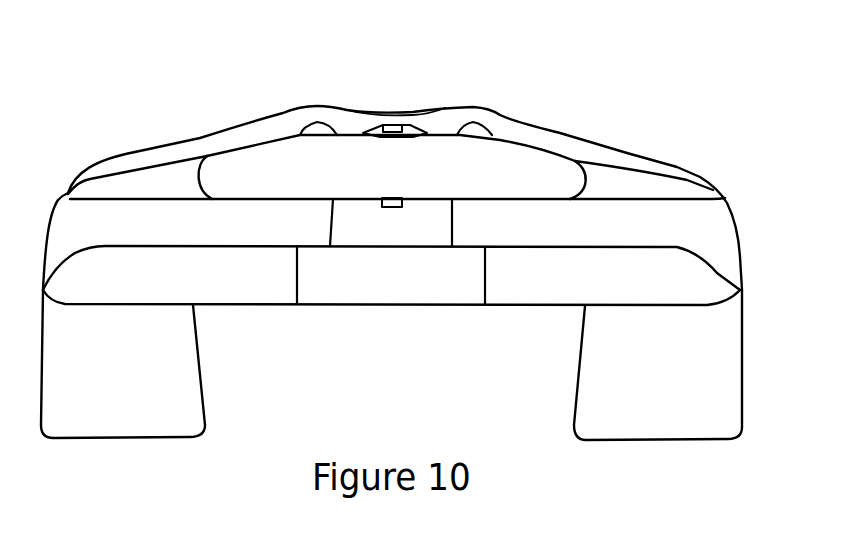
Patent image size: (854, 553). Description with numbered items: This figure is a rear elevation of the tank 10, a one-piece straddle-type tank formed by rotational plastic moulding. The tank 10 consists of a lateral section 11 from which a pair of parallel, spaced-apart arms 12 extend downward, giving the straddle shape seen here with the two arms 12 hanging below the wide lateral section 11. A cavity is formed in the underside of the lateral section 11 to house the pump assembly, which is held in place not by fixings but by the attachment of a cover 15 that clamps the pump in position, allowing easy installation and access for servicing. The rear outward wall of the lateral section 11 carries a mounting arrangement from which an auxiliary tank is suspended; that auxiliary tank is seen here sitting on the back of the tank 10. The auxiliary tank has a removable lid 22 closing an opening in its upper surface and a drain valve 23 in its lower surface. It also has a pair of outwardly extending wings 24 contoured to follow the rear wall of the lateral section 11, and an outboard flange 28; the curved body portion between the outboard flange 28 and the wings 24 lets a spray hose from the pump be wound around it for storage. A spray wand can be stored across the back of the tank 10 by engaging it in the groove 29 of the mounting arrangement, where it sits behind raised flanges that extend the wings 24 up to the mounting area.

The tank 10 is at (723, 182).
The lateral section 11 is at (528, 133).
The arms 12 is at (160, 408).
The cover 15 is at (333, 280).
The removable lid 22 is at (400, 127).
The drain valve 23 is at (393, 207).
The wings 24 is at (152, 180).
The outboard flange 28 is at (290, 163).
The groove 29 is at (530, 227).